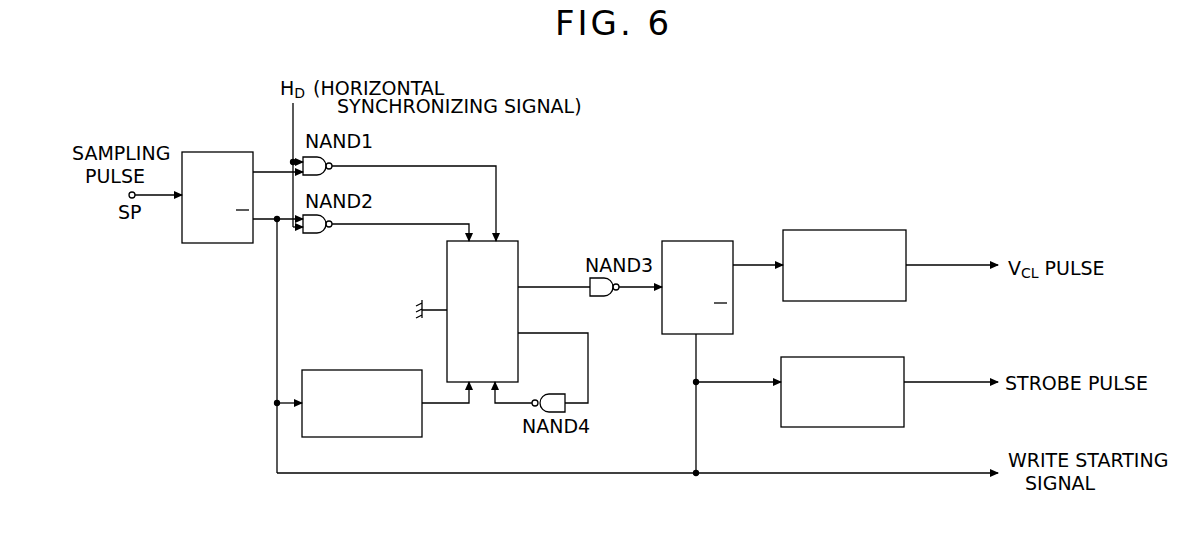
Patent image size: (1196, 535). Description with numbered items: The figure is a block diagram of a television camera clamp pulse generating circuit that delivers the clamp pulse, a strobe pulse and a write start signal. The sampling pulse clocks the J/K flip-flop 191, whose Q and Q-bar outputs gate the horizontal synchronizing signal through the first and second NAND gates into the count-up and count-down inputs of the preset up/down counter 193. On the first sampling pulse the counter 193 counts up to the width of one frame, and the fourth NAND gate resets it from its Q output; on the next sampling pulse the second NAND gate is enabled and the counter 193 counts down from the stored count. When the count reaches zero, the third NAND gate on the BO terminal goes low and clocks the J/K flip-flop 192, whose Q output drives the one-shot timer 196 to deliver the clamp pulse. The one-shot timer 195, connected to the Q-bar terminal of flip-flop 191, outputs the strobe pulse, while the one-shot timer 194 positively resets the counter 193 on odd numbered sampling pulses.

The J/K flip-flop 191 is at (212, 155).
The J/K flip-flop 192 is at (705, 245).
The preset up/down counter 193 is at (450, 278).
The one-shot timer 194 is at (355, 370).
The one-shot timer 195 is at (850, 349).
The one-shot timer 196 is at (848, 228).